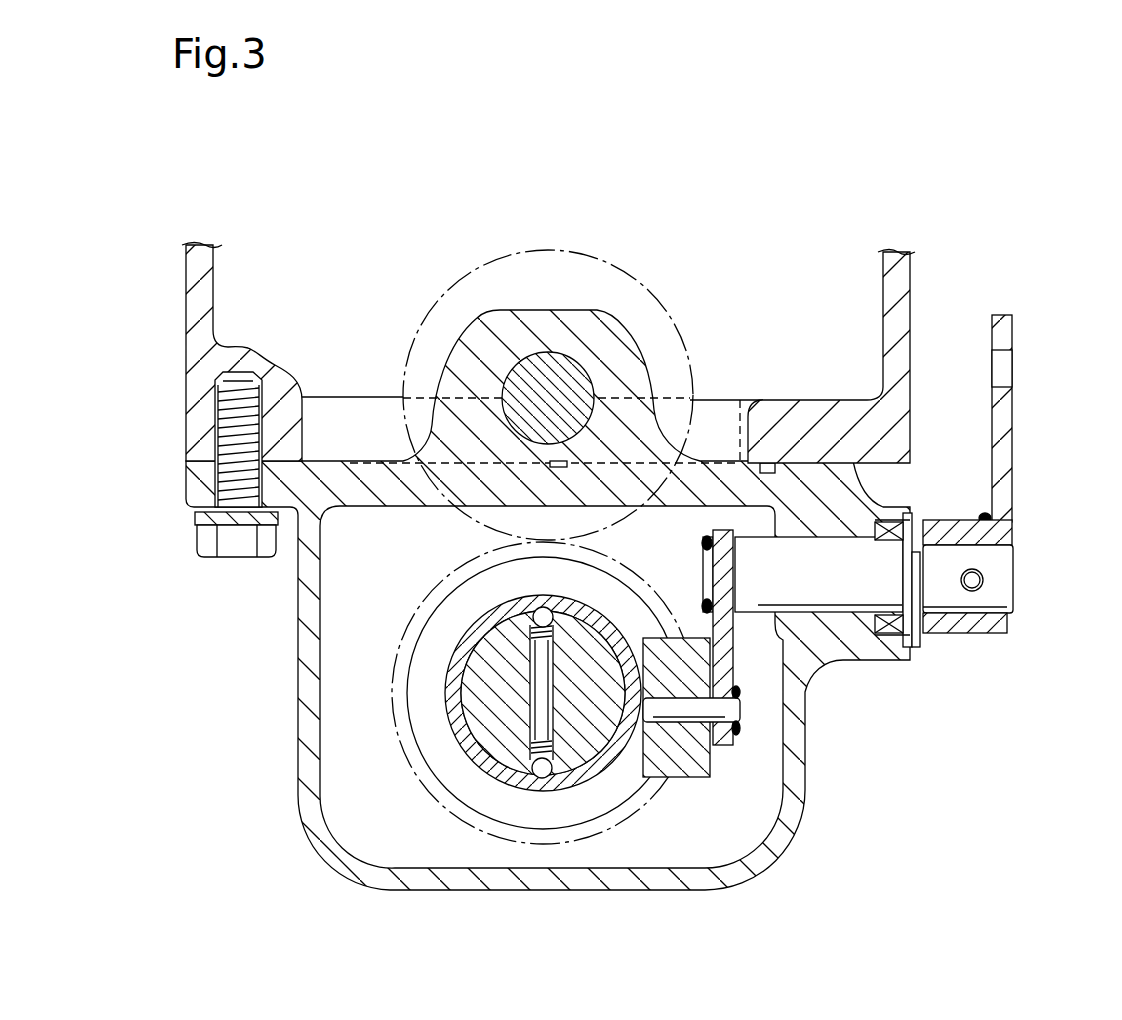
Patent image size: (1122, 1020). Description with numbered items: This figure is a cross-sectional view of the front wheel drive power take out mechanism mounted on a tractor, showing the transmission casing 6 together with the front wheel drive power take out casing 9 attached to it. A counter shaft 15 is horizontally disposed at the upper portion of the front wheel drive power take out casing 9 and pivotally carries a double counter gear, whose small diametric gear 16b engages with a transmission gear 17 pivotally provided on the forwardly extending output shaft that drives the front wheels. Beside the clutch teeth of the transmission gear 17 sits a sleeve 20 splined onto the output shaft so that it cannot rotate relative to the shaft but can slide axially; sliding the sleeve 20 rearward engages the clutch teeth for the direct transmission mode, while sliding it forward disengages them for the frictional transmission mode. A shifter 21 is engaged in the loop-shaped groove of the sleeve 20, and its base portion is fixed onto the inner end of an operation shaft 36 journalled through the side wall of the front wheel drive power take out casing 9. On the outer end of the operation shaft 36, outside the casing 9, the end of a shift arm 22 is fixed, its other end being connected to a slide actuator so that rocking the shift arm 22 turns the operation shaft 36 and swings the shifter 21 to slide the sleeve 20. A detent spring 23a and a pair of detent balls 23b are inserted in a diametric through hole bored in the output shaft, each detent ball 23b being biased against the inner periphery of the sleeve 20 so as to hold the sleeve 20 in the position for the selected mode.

The transmission casing 6 is at (187, 352).
The front wheel drive power take out casing 9 is at (303, 686).
The counter shaft 15 is at (577, 367).
The small diametric gear 16b is at (465, 282).
The transmission gear 17 is at (437, 587).
The sleeve 20 is at (620, 790).
The shifter 21 is at (730, 665).
The shift arm 22 is at (1012, 433).
The detent spring 23a is at (513, 649).
The detent ball 23b is at (487, 797).
The operation shaft 36 is at (998, 590).